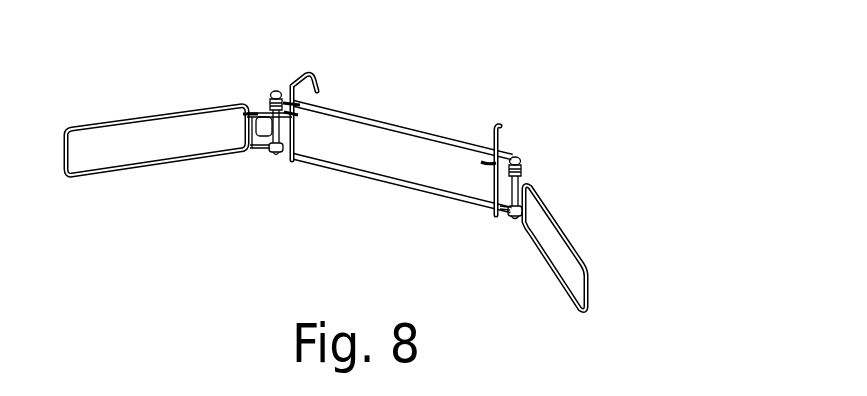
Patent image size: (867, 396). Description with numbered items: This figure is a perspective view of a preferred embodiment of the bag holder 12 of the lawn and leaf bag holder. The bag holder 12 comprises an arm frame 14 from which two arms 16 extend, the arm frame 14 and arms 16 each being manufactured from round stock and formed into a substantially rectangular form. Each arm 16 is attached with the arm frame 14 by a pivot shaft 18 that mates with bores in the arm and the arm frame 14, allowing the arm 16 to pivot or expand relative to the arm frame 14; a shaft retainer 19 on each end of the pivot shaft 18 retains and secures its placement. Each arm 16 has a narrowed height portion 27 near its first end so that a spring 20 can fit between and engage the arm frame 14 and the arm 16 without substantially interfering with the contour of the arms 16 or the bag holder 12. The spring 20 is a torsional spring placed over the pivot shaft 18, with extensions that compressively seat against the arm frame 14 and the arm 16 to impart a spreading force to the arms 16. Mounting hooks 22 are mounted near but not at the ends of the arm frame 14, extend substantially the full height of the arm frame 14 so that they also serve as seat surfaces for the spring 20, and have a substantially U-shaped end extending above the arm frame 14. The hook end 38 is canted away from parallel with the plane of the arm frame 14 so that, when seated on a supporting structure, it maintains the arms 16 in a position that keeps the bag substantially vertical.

The bag holder 12 is at (554, 140).
The arm frame 14 is at (400, 190).
The arm 16 is at (563, 231).
The pivot shaft 18 is at (266, 152).
The shaft retainer 19 is at (277, 91).
The spring 20 is at (523, 171).
The mounting hook 22 is at (500, 126).
The narrowed height portion 27 is at (246, 134).
The hook end 38 is at (320, 87).